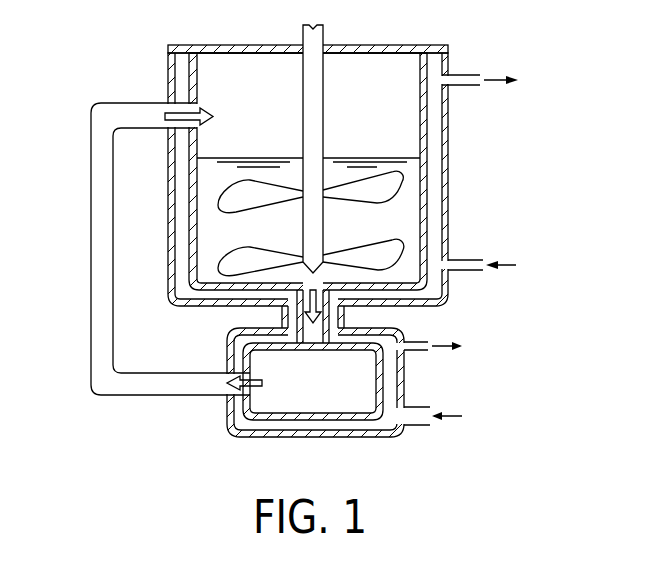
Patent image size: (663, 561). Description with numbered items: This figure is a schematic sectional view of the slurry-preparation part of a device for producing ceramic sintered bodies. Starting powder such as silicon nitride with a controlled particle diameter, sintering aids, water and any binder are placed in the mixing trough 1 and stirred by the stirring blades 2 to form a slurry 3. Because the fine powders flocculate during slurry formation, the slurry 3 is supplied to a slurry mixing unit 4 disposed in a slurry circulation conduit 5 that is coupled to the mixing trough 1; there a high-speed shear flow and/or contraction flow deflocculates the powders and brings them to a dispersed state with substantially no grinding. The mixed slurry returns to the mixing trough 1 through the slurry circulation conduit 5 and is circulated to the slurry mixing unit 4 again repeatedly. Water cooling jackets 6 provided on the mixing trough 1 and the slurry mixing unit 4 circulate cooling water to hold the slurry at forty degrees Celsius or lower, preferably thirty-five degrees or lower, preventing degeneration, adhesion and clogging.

The mixing trough 1 is at (458, 70).
The stirring blades 2 is at (405, 246).
The slurry 3 is at (414, 192).
The slurry mixing unit 4 is at (422, 382).
The slurry circulation conduit 5 is at (181, 383).
The water cooling jackets 6 is at (434, 119).